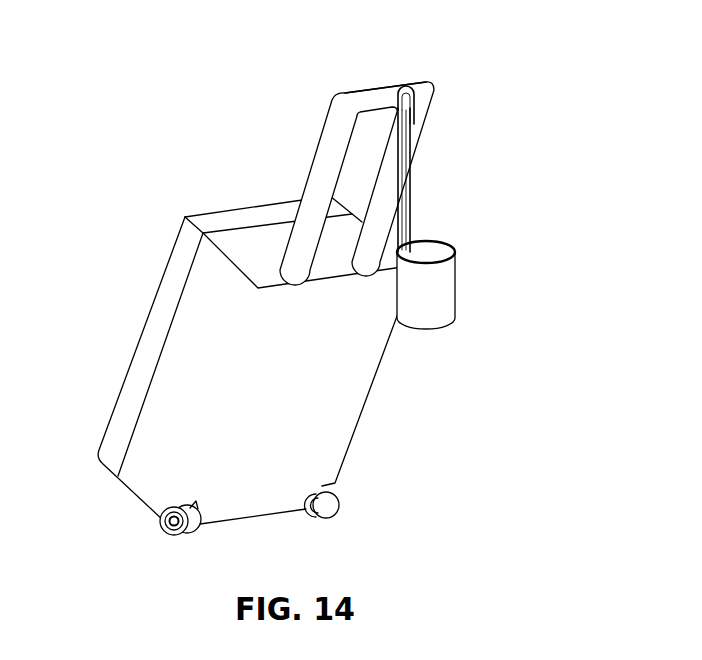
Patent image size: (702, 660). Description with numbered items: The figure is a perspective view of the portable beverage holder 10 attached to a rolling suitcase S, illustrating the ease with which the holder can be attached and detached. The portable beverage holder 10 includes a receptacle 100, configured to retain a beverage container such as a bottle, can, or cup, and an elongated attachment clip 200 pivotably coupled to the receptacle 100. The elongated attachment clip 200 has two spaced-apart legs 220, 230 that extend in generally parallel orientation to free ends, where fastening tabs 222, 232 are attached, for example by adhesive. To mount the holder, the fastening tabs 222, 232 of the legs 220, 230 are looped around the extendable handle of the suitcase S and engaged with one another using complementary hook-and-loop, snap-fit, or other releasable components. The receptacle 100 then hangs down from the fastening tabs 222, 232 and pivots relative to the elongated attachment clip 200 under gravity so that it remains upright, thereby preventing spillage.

The rolling suitcase S is at (134, 302).
The portable beverage holder 10 is at (465, 291).
The receptacle 100 is at (444, 316).
The elongated attachment clip 200 is at (450, 151).
The leg 220 is at (409, 238).
The fastening tab 222 is at (401, 88).
The leg 230 is at (396, 160).
The fastening tab 232 is at (361, 112).